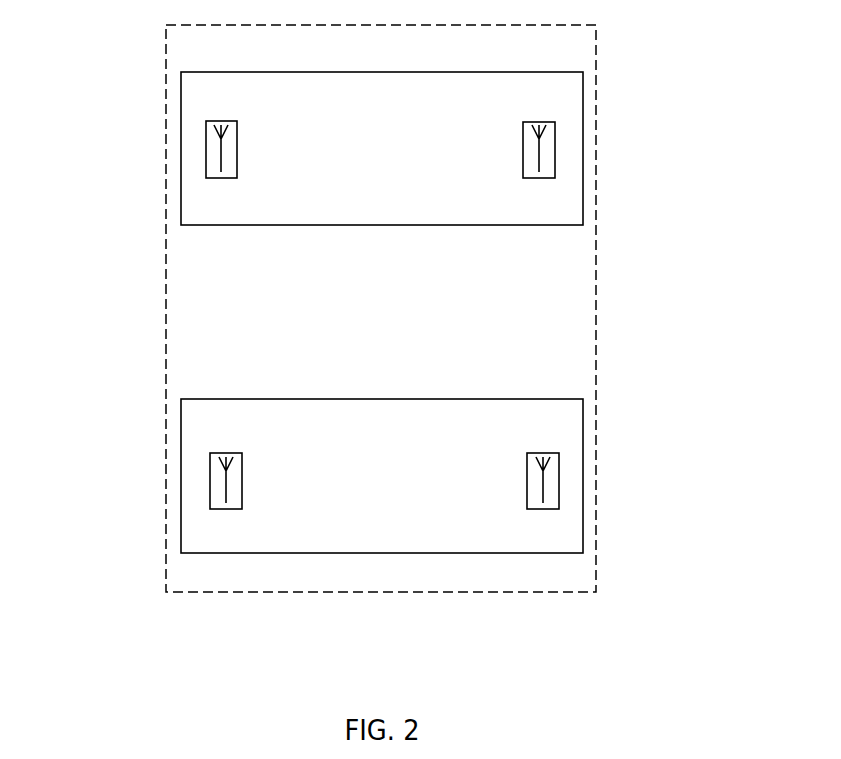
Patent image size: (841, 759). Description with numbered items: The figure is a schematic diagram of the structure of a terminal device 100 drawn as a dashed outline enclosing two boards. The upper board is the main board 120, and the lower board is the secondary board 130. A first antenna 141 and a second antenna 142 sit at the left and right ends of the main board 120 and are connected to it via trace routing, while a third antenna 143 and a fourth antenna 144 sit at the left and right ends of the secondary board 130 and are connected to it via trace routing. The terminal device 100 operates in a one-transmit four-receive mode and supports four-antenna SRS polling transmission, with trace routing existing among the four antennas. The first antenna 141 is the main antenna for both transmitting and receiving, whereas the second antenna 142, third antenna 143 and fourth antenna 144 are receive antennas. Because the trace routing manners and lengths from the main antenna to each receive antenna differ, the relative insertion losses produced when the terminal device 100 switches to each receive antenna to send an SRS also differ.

The terminal device 100 is at (350, 592).
The main board 120 is at (343, 158).
The secondary board 130 is at (318, 486).
The first antenna 141 is at (206, 146).
The second antenna 142 is at (555, 146).
The third antenna 143 is at (210, 483).
The fourth antenna 144 is at (559, 478).